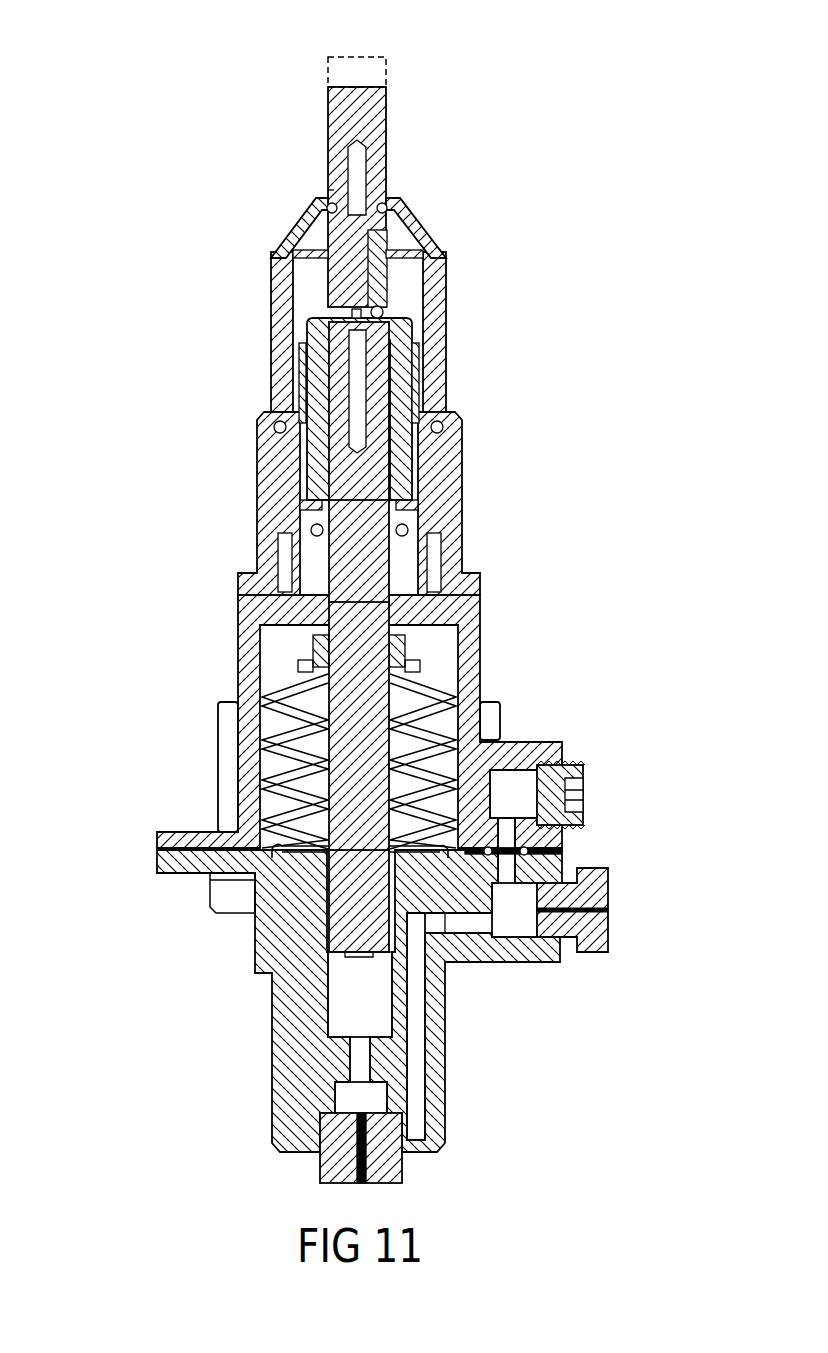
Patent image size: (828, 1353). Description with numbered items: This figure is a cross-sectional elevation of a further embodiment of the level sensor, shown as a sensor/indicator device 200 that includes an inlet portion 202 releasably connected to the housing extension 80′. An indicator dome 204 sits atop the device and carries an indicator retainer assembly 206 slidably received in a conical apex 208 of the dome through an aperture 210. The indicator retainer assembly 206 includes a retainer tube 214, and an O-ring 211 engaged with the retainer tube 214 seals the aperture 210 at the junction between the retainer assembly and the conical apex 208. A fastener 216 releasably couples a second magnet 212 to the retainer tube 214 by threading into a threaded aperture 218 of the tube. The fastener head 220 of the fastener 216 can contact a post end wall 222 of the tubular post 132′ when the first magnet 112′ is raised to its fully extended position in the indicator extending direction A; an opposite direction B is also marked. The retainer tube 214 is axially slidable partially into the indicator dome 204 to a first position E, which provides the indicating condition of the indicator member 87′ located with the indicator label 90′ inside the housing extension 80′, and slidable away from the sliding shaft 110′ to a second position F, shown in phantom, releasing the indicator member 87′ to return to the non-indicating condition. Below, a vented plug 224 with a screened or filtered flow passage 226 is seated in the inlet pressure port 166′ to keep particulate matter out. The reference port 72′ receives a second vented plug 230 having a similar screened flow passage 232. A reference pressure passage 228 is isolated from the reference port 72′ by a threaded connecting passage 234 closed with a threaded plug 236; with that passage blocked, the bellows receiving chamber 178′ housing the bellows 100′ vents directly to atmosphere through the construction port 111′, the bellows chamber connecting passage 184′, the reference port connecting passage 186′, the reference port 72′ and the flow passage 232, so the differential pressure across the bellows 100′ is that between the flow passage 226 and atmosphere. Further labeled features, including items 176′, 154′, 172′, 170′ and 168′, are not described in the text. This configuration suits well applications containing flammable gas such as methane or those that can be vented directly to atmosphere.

The sensor/indicator device 200 is at (533, 319).
The inlet portion 202 is at (288, 956).
The indicator dome 204 is at (282, 363).
The indicator retainer assembly 206 is at (390, 114).
The conical apex 208 is at (398, 217).
The aperture 210 is at (345, 192).
The O-ring 211 is at (328, 207).
The second magnet 212 is at (408, 254).
The retainer tube 214 is at (340, 102).
The fastener 216 is at (385, 290).
The threaded aperture 218 is at (358, 178).
The fastener head 220 is at (380, 315).
The post end wall 222 is at (292, 321).
The vented plug 224 is at (392, 1162).
The flow passage 226 is at (362, 1183).
The reference pressure passage 228 is at (420, 1083).
The second vented plug 230 is at (600, 927).
The flow passage 232 is at (608, 909).
The threaded connecting passage 234 is at (455, 920).
The threaded plug 236 is at (440, 930).
The tubular post 132′ is at (312, 333).
The indicator member 87′ is at (412, 370).
The first magnet 112′ is at (372, 378).
The indicator label 90′ is at (440, 402).
The housing extension 80′ is at (267, 452).
The sliding shaft 110′ is at (345, 472).
The bellows 100′ is at (420, 685).
The bellows receiving chamber 178′ is at (452, 682).
The flange 176′ is at (500, 713).
The construction port 111′ is at (522, 792).
The bellows chamber connecting passage 184′ is at (508, 834).
The seal 154′ is at (537, 852).
The reference port connecting passage 186′ is at (507, 872).
The stem lower portion 172′ is at (335, 916).
The cavity 170′ is at (338, 1002).
The neck 168′ is at (360, 1060).
The inlet pressure port 166′ is at (347, 1099).
The reference port 72′ is at (523, 928).
The second position F is at (388, 56).
The first position E is at (327, 160).
The indicator extending direction A is at (126, 508).
The direction B is at (72, 495).